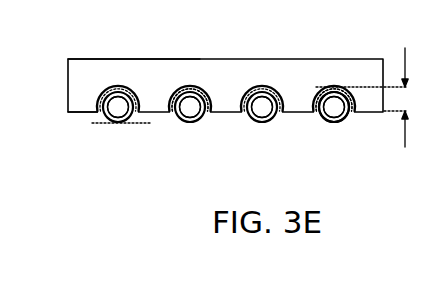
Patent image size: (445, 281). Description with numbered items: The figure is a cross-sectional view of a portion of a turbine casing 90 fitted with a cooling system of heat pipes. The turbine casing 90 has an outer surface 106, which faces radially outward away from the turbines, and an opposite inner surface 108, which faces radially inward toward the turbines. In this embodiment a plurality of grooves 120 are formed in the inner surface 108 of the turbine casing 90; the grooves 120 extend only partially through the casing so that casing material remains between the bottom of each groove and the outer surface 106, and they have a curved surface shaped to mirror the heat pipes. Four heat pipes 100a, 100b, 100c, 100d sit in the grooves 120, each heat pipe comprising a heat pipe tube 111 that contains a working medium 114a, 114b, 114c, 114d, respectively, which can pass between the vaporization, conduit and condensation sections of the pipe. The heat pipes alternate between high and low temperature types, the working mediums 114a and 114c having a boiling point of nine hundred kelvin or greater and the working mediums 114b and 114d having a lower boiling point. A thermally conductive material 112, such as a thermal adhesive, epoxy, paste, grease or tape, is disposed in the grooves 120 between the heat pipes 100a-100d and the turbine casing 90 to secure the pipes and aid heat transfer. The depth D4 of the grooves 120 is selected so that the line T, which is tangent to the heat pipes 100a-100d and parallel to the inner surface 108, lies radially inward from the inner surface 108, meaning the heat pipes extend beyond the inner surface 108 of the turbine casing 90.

The turbine casing 90 is at (244, 85).
The heat pipe 100a is at (106, 131).
The heat pipe 100b is at (180, 132).
The heat pipe 100c is at (262, 131).
The heat pipe 100d is at (322, 132).
The outer surface 106 is at (68, 59).
The inner surface 108 is at (73, 113).
The heat pipe tube 111 is at (348, 113).
The thermally conductive material 112 is at (176, 96).
The working medium 114a is at (117, 107).
The working medium 114b is at (189, 107).
The working medium 114c is at (261, 107).
The working medium 114d is at (321, 94).
The grooves 120 is at (334, 107).
The depth D4 is at (367, 88).
The line T is at (141, 123).